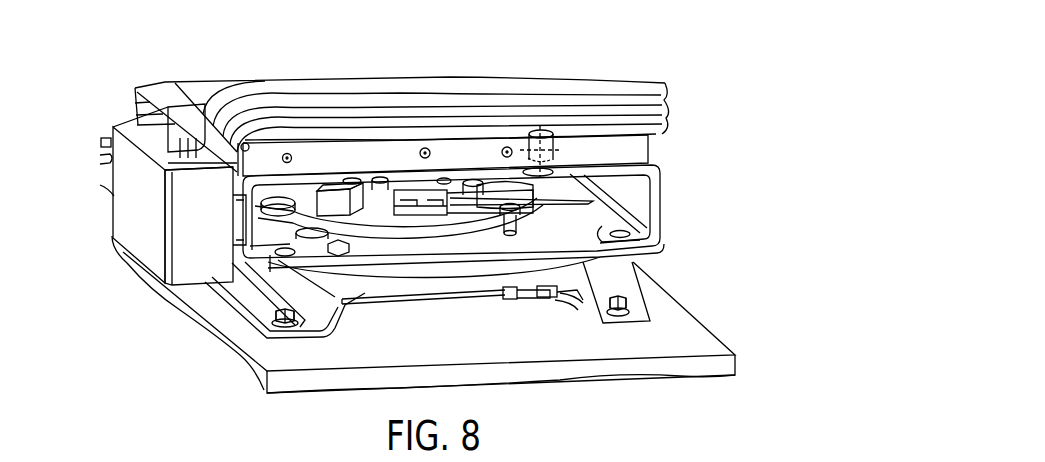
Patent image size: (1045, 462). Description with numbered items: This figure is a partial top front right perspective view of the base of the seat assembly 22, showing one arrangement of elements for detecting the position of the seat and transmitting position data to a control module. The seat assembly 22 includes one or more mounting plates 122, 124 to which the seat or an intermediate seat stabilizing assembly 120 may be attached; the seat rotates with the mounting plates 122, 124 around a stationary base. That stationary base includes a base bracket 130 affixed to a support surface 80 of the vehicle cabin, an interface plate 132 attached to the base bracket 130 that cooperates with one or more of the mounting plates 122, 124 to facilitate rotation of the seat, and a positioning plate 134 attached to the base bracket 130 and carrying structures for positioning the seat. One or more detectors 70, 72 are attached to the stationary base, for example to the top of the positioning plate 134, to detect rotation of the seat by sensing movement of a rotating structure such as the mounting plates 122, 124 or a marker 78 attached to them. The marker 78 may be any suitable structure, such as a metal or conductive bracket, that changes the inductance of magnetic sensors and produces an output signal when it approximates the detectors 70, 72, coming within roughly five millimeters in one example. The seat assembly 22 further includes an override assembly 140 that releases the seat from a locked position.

The seat assembly 22 is at (680, 56).
The detector 70 is at (332, 193).
The detector 72 is at (410, 190).
The marker 78 is at (553, 157).
The support surface 80 is at (707, 338).
The seat stabilizing assembly 120 is at (667, 108).
The mounting plate 122 is at (664, 204).
The mounting plate 124 is at (663, 252).
The base bracket 130 is at (425, 302).
The interface plate 132 is at (365, 280).
The positioning plate 134 is at (520, 220).
The override assembly 140 is at (112, 185).